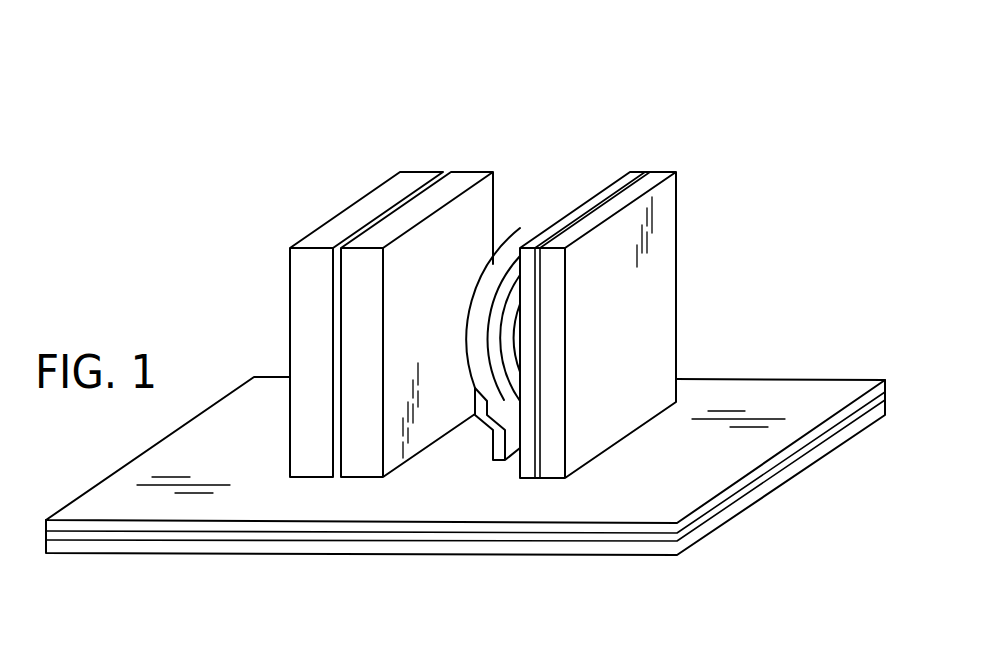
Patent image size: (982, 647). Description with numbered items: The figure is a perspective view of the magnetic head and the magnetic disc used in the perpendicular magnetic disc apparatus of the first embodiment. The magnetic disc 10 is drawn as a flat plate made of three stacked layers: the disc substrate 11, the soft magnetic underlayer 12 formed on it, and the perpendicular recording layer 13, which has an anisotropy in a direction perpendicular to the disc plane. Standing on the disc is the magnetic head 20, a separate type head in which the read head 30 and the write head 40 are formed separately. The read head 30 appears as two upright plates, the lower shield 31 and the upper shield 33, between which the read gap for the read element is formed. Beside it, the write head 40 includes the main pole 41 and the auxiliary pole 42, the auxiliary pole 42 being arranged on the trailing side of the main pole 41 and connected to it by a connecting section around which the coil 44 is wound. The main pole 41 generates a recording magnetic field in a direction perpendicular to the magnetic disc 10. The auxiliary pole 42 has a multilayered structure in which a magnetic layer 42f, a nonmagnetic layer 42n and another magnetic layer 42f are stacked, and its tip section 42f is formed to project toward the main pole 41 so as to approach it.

The magnetic disc 10 is at (465, 512).
The disc substrate 11 is at (711, 526).
The soft magnetic underlayer 12 is at (744, 493).
The perpendicular recording layer 13 is at (788, 454).
The magnetic head 20 is at (747, 97).
The read head 30 is at (381, 305).
The lower shield 31 is at (311, 474).
The upper shield 33 is at (364, 474).
The write head 40 is at (560, 175).
The main pole 41 is at (503, 461).
The auxiliary pole 42 is at (637, 307).
The magnetic layer 42f is at (640, 172).
The nonmagnetic layer 42n is at (652, 171).
The coil 44 is at (532, 229).